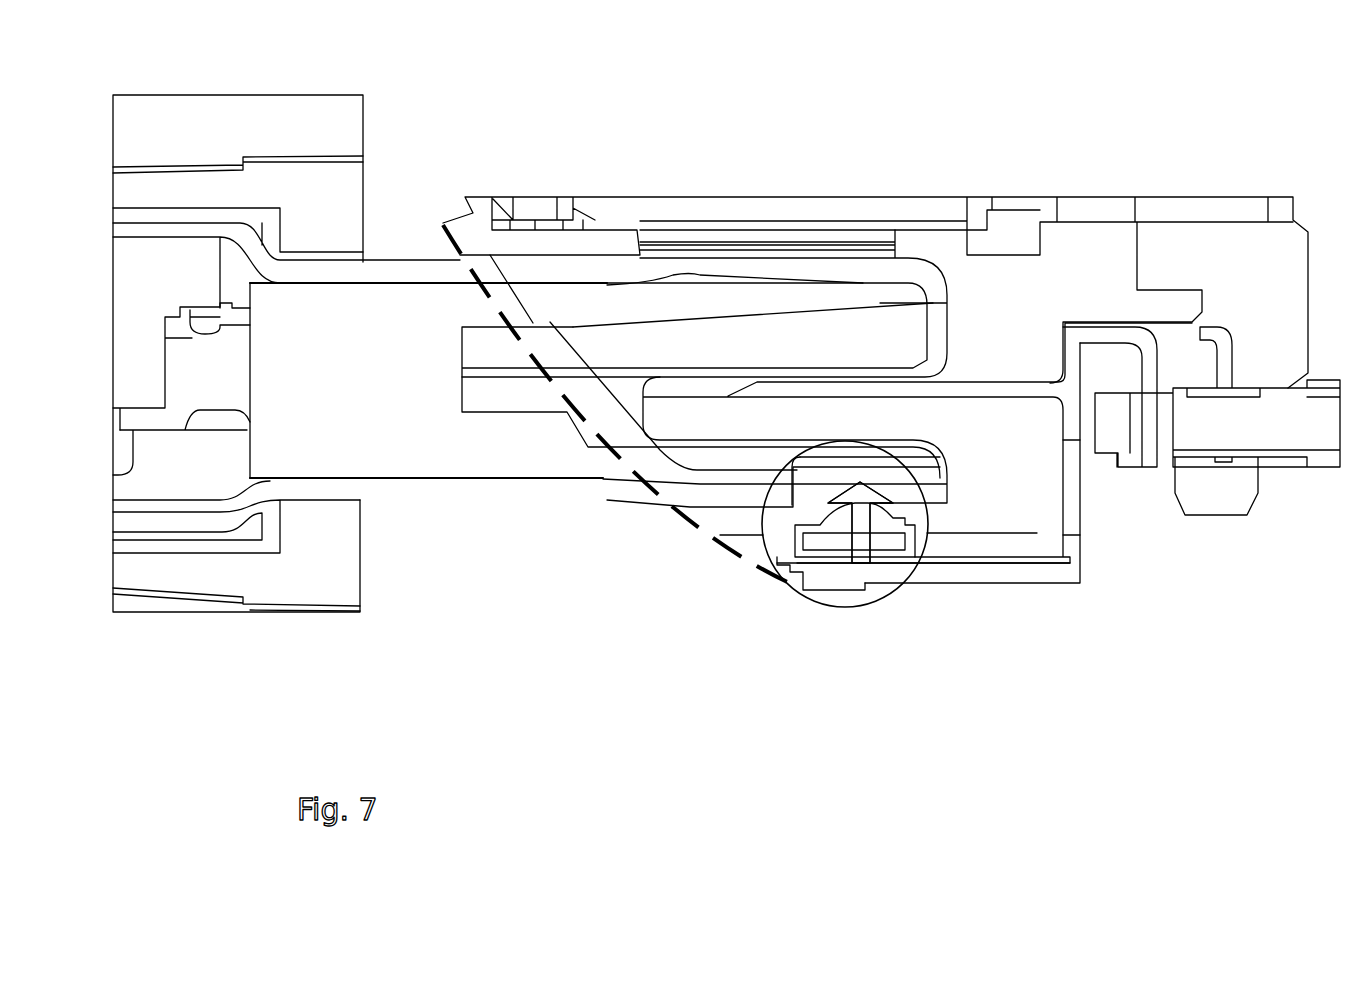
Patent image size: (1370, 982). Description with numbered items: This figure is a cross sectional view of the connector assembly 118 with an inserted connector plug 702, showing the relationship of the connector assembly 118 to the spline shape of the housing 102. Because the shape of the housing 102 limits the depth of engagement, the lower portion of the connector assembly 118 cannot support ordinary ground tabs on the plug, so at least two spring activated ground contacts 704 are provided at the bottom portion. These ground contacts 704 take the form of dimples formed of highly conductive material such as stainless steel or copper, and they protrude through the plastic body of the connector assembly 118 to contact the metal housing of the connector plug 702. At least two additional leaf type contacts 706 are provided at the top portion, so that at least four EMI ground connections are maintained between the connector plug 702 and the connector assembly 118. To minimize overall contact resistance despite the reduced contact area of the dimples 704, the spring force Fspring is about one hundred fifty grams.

The connector assembly 118 is at (913, 200).
The connector plug 702 is at (795, 419).
The leaf type contacts 706 is at (703, 262).
The spring activated ground contacts 704 is at (873, 610).
The housing 102 is at (662, 505).
The spring force Fspring is at (862, 505).